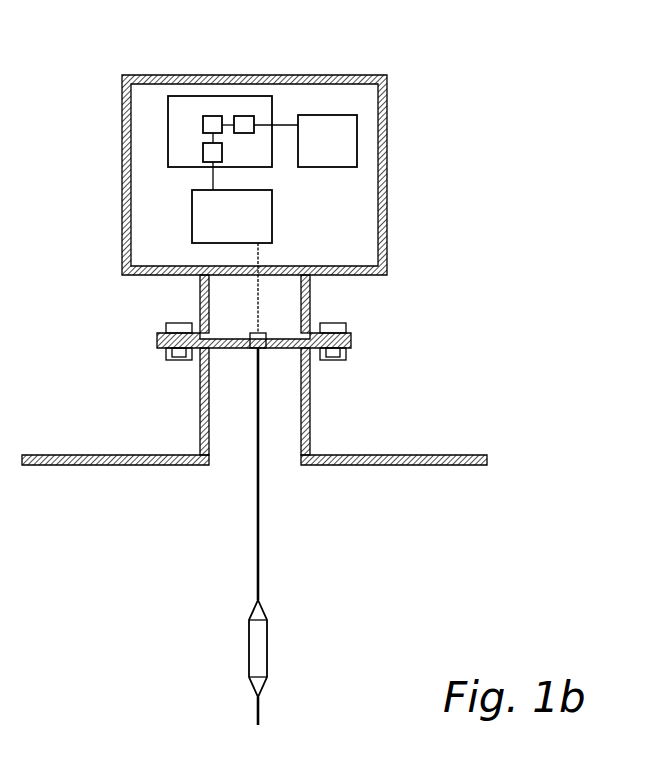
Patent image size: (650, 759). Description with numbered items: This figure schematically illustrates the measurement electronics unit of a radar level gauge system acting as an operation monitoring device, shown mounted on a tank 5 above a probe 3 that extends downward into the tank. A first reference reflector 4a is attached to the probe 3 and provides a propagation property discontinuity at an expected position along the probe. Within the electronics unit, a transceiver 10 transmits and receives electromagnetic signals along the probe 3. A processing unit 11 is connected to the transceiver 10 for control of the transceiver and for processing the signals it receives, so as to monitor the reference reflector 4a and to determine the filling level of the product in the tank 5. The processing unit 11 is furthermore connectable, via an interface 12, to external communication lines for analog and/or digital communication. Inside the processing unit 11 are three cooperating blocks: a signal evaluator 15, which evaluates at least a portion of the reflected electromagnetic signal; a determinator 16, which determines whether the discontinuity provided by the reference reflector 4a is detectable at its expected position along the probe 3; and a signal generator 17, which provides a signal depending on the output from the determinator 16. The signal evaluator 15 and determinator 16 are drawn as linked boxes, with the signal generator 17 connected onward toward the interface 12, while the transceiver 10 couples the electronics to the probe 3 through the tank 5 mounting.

The probe 3 is at (262, 570).
The first reference reflector 4a is at (258, 645).
The tank 5 is at (418, 455).
The transceiver 10 is at (272, 217).
The processing unit 11 is at (168, 125).
The interface 12 is at (328, 115).
The signal evaluator 15 is at (203, 157).
The determinator 16 is at (212, 116).
The signal generator 17 is at (245, 116).